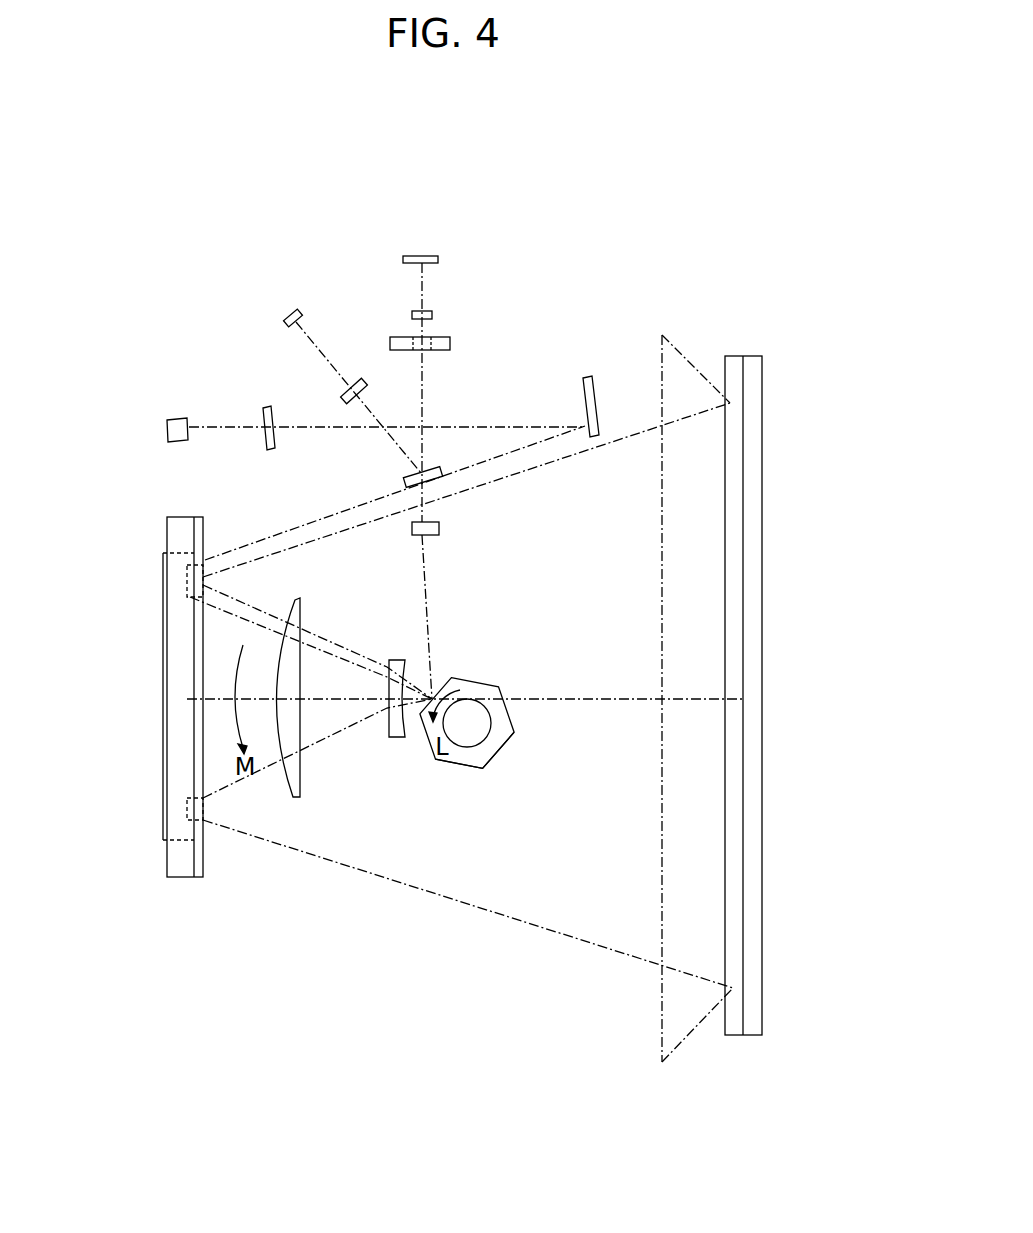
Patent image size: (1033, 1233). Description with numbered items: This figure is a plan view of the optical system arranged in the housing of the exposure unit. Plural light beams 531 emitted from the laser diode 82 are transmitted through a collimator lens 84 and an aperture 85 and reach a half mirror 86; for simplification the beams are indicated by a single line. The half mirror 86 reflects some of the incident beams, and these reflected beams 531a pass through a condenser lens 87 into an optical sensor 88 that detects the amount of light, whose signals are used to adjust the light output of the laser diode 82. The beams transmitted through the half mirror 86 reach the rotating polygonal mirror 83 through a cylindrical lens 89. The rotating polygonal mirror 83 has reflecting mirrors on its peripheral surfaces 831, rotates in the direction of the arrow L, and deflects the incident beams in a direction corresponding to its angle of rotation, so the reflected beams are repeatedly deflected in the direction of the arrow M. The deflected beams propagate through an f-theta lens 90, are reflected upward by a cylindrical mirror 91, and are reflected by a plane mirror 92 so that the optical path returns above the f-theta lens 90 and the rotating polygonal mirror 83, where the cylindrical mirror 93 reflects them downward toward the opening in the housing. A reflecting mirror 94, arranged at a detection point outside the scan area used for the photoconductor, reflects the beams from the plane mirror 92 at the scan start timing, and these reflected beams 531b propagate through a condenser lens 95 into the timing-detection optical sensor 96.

The laser diode 82 is at (433, 256).
The light beams 531 is at (422, 292).
The collimator lens 84 is at (427, 311).
The aperture 85 is at (446, 337).
The optical sensor 88 is at (297, 312).
The condenser lens 87 is at (351, 382).
The half mirror 86 is at (430, 468).
The cylindrical lens 89 is at (440, 527).
The reflecting mirror 94 is at (592, 382).
The cylindrical mirror 93 is at (733, 367).
The reflected beams 531a is at (397, 450).
The reflected beams 531b is at (523, 427).
The timing-detection optical sensor 96 is at (177, 427).
The condenser lens 95 is at (263, 412).
The rotating polygonal mirror 83 is at (497, 717).
The peripheral surfaces 831 is at (460, 768).
The f-theta lens 90 is at (397, 737).
The plane mirror 92 is at (178, 763).
The cylindrical mirror 91 is at (183, 858).